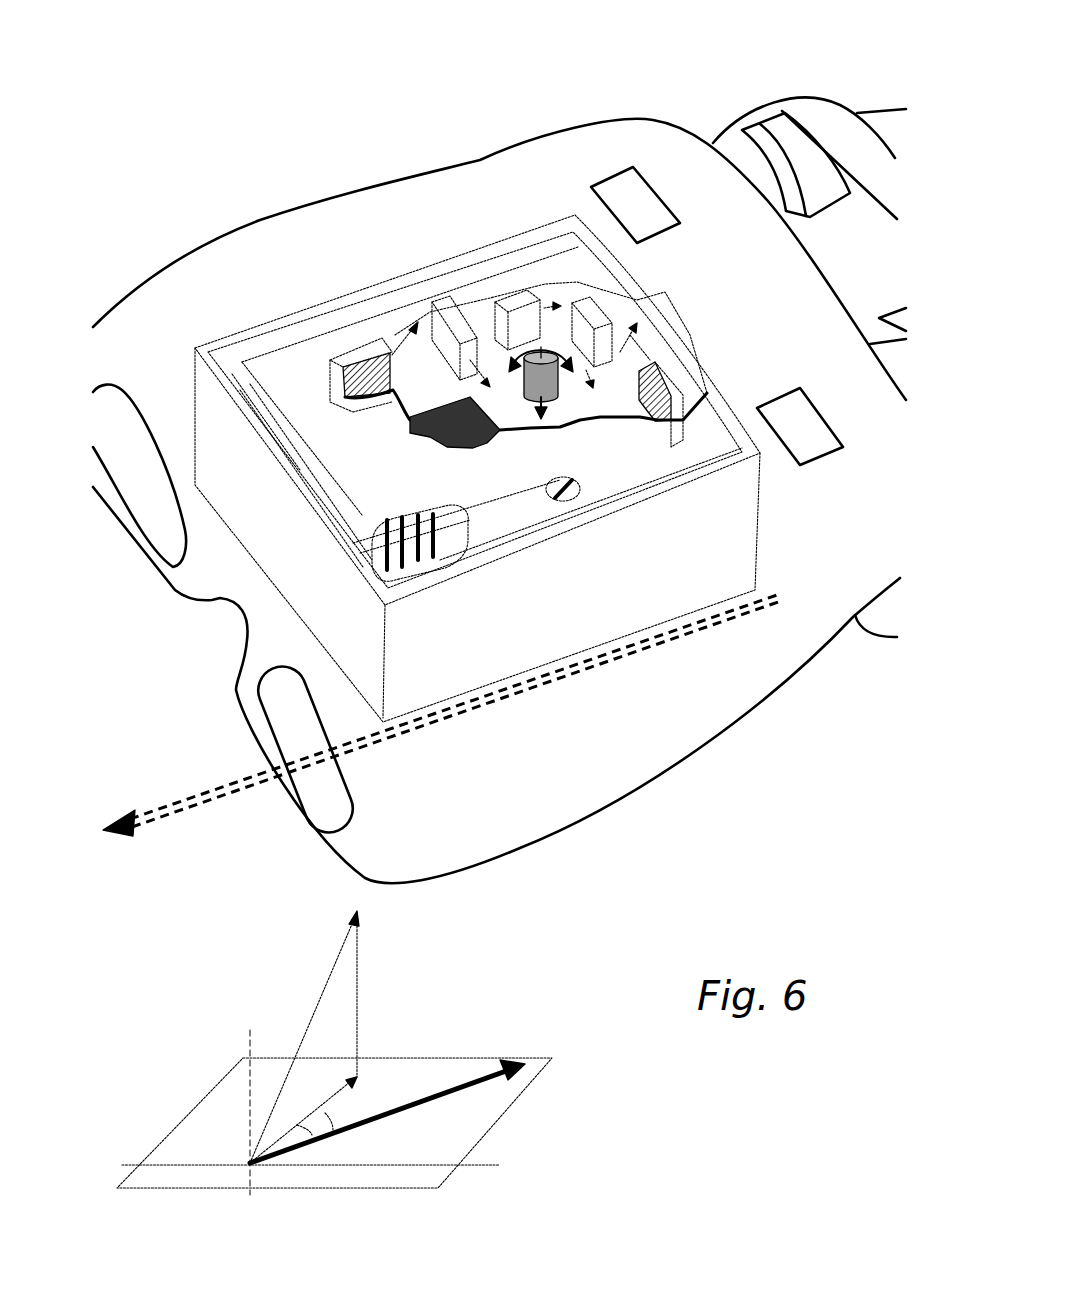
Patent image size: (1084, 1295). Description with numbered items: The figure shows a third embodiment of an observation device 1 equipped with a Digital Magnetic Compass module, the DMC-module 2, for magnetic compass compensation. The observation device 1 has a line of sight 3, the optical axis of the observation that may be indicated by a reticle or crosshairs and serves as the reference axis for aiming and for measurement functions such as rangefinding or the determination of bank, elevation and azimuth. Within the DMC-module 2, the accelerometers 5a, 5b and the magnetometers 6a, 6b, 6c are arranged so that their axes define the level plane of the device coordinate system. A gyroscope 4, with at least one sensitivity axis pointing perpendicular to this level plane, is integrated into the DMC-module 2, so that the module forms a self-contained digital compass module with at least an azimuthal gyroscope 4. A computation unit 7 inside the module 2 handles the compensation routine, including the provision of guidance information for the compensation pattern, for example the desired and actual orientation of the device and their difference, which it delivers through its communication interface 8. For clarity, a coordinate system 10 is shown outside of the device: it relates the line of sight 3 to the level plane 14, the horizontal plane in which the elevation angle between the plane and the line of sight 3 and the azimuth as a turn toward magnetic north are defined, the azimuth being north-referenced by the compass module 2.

The observation device 1 is at (177, 203).
The DMC-module 2 is at (287, 360).
The line of sight 3 is at (247, 780).
The gyroscope 4 is at (535, 385).
The accelerometer 5a is at (367, 343).
The accelerometer 5b is at (655, 363).
The magnetometer 6a is at (583, 302).
The magnetometer 6b is at (517, 300).
The magnetometer 6c is at (463, 323).
The computation unit 7 is at (420, 433).
The communication interface 8 is at (375, 590).
The coordinate system 10 is at (341, 1053).
The level plane 14 is at (238, 1063).